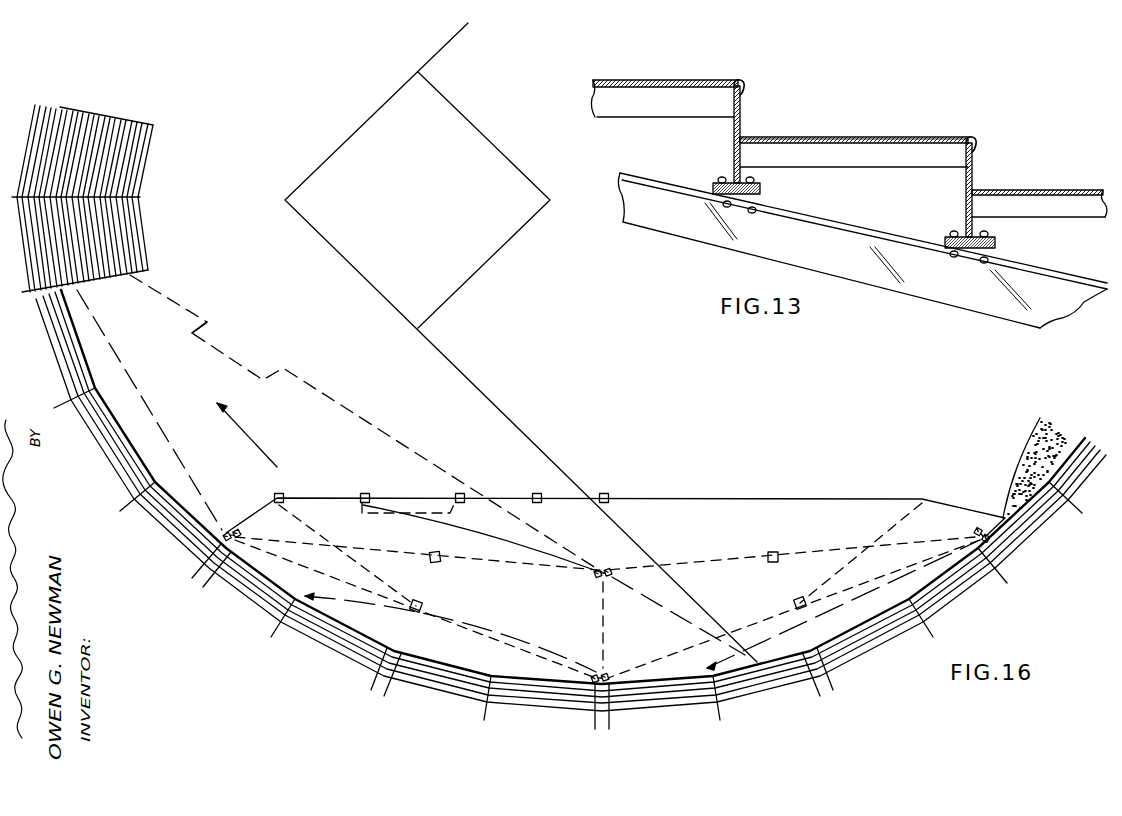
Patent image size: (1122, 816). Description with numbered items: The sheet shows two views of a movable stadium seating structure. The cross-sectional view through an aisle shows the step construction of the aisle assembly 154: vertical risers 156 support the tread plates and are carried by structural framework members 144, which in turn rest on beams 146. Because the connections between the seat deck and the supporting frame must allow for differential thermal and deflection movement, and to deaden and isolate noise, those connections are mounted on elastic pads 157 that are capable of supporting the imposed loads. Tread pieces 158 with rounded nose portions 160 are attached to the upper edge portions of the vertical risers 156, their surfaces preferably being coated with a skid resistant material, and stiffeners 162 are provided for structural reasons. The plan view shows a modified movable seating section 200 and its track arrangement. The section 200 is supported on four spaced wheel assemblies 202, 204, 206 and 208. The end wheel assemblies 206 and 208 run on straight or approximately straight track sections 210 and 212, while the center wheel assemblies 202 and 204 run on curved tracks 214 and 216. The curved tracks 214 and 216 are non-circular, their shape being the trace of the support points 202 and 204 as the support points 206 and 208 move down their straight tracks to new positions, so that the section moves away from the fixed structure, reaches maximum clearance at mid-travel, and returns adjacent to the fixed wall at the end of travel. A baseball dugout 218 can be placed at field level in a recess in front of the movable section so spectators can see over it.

In FIG. 13, the structural framework member 144 is at (765, 194).
In FIG. 13, the beam 146 is at (810, 233).
In FIG. 13, the panel assembly 154 is at (848, 137).
In FIG. 13, the riser 156 is at (741, 122).
In FIG. 13, the elastic pad 157 is at (712, 188).
In FIG. 13, the tread piece 158 is at (790, 136).
In FIG. 13, the rounded nose portion 160 is at (742, 88).
In FIG. 13, the stiffener 162 is at (653, 108).
In FIG. 16, the movable seating section 200 is at (366, 407).
In FIG. 16, the wheel assembly 202 is at (605, 566).
In FIG. 16, the wheel assembly 204 is at (614, 672).
In FIG. 16, the wheel assembly 206 is at (226, 527).
In FIG. 16, the wheel assembly 208 is at (975, 533).
In FIG. 16, the straight track section 210 is at (150, 400).
In FIG. 16, the straight track section 212 is at (794, 620).
In FIG. 16, the curved track 214 is at (470, 527).
In FIG. 16, the curved track 216 is at (520, 640).
In FIG. 16, the baseball dugout 218 is at (237, 347).